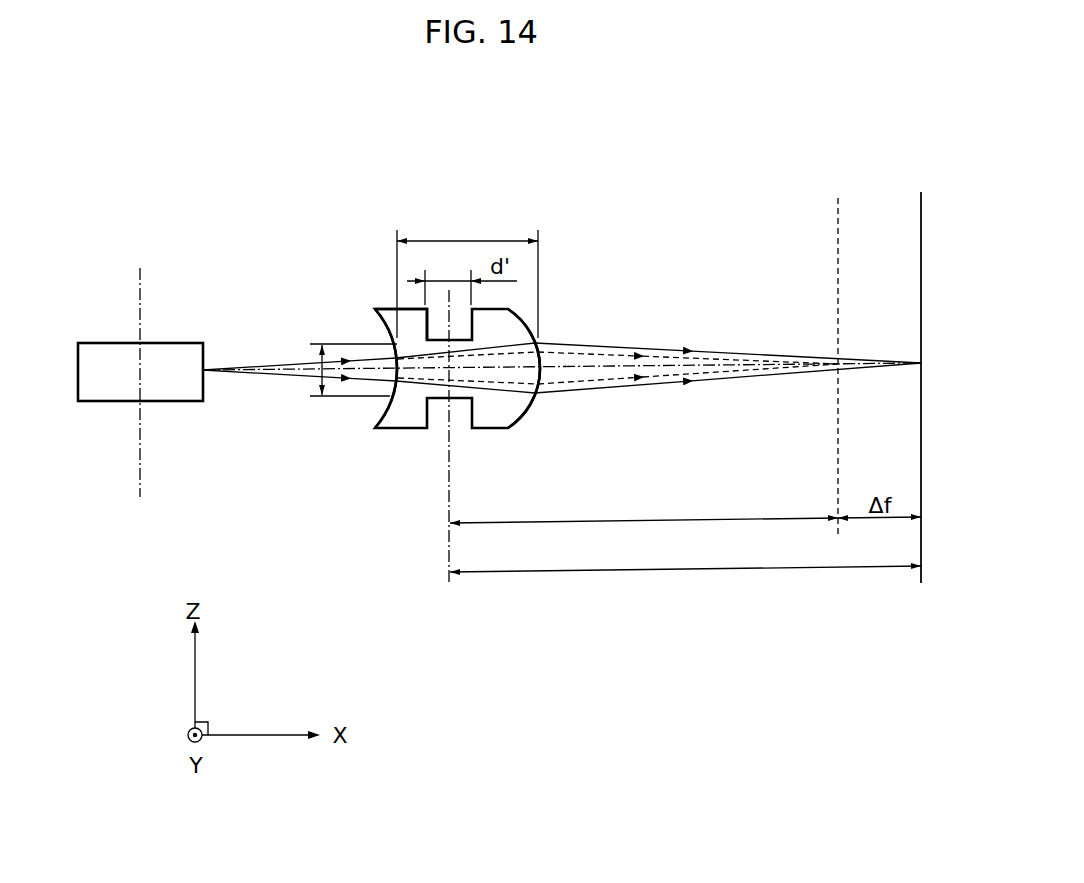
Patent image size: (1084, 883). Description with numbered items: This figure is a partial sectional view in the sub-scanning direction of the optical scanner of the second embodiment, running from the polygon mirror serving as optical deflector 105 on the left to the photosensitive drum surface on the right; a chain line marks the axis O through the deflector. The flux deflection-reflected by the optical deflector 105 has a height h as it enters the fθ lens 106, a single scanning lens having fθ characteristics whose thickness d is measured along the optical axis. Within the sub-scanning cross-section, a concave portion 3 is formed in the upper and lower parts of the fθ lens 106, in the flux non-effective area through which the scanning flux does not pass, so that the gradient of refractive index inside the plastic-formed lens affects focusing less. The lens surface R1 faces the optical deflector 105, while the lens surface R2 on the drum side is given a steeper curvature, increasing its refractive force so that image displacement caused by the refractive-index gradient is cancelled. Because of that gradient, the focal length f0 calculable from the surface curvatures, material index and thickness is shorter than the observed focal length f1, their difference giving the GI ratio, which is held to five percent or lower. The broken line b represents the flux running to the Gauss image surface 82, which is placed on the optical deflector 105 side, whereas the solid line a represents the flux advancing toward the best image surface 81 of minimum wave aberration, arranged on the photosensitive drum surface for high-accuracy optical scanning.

The optical deflector 105 is at (100, 402).
The fθ lens 106 is at (407, 318).
The concave portion 3 is at (456, 400).
The lens surface R1 is at (385, 412).
The lens surface R2 is at (542, 355).
The solid line a is at (671, 386).
The broken line b is at (609, 380).
The Gauss image surface 82 is at (836, 208).
The best image surface 81 is at (919, 208).
The emission origin axis O is at (143, 472).
The lens thickness d is at (467, 275).
The beam height h is at (318, 363).
The focal length f0 is at (644, 509).
The observed focal length f1 is at (685, 558).